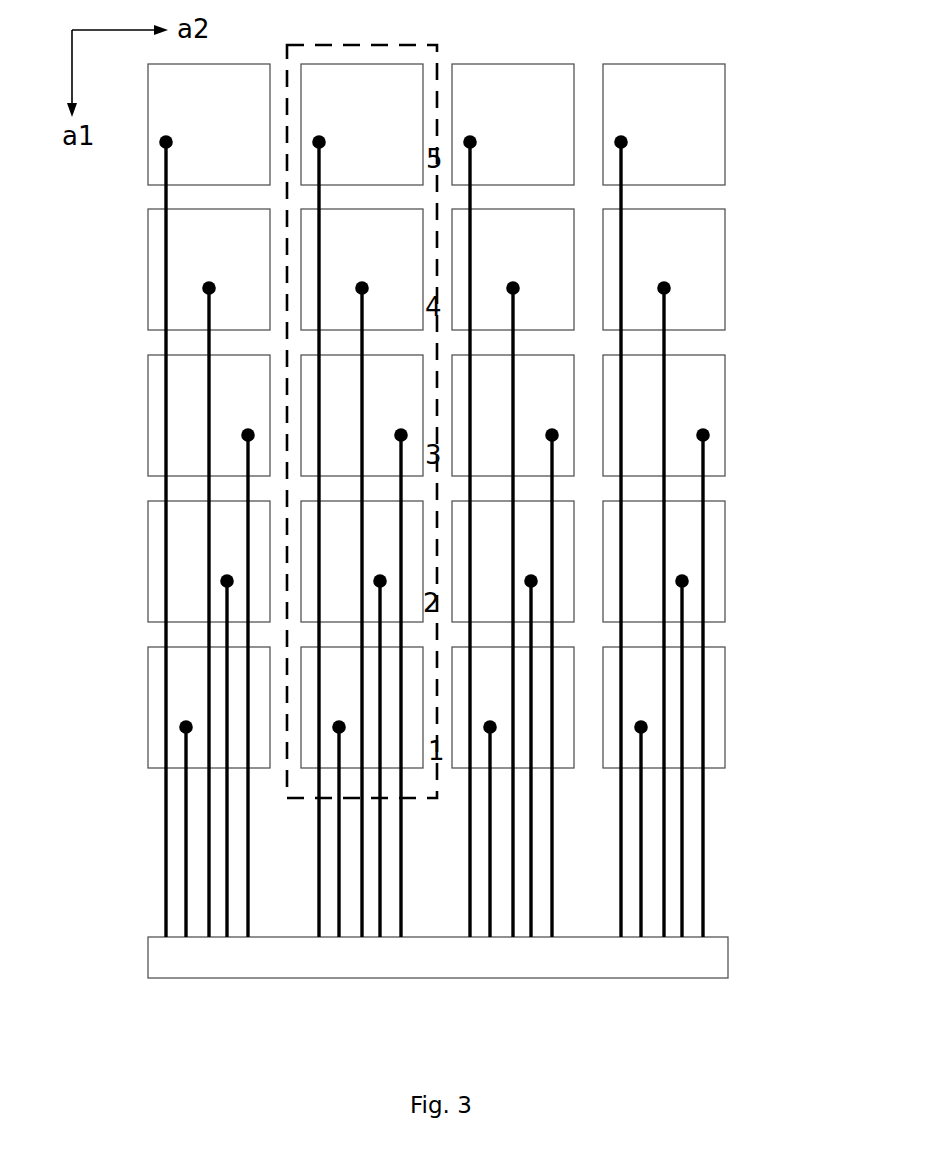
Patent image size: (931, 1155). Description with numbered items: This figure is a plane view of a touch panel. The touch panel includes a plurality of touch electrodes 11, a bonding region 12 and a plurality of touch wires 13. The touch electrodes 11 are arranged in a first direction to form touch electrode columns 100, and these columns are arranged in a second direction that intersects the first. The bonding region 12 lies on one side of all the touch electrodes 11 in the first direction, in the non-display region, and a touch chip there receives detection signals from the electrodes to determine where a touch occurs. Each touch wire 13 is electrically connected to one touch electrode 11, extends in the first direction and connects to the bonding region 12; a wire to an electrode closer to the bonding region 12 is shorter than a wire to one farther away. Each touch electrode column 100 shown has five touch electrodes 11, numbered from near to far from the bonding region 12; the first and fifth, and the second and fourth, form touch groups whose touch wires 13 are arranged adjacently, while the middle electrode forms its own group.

The touch electrode 11 is at (508, 122).
The bonding region 12 is at (437, 958).
The touch wire 13 is at (163, 587).
The touch electrode column 100 is at (357, 43).